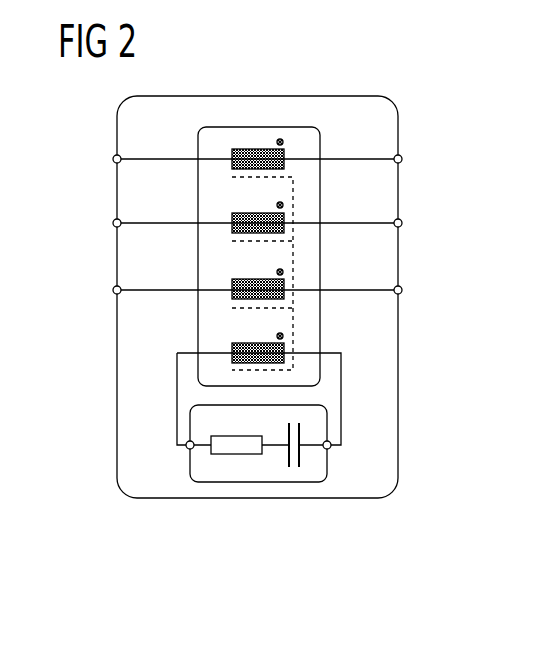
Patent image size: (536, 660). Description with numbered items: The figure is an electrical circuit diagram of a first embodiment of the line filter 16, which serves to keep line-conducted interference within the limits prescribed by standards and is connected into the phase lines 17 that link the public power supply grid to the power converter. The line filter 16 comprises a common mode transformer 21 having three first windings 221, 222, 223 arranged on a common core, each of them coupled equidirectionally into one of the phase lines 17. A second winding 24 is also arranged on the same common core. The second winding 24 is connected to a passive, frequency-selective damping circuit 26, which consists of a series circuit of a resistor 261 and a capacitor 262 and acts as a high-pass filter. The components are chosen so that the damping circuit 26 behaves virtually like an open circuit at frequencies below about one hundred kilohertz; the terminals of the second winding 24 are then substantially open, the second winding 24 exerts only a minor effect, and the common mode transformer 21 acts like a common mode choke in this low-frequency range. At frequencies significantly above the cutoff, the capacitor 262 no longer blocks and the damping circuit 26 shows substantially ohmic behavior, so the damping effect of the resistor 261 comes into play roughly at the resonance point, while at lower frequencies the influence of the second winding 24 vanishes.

The line filter 16 is at (399, 365).
The phase lines 17 is at (325, 158).
The common mode transformer 21 is at (246, 127).
The first winding 221 is at (232, 151).
The first winding 222 is at (232, 216).
The first winding 223 is at (232, 283).
The second winding 24 is at (232, 348).
The damping circuit 26 is at (263, 435).
The resistor 261 is at (209, 449).
The capacitor 262 is at (300, 432).